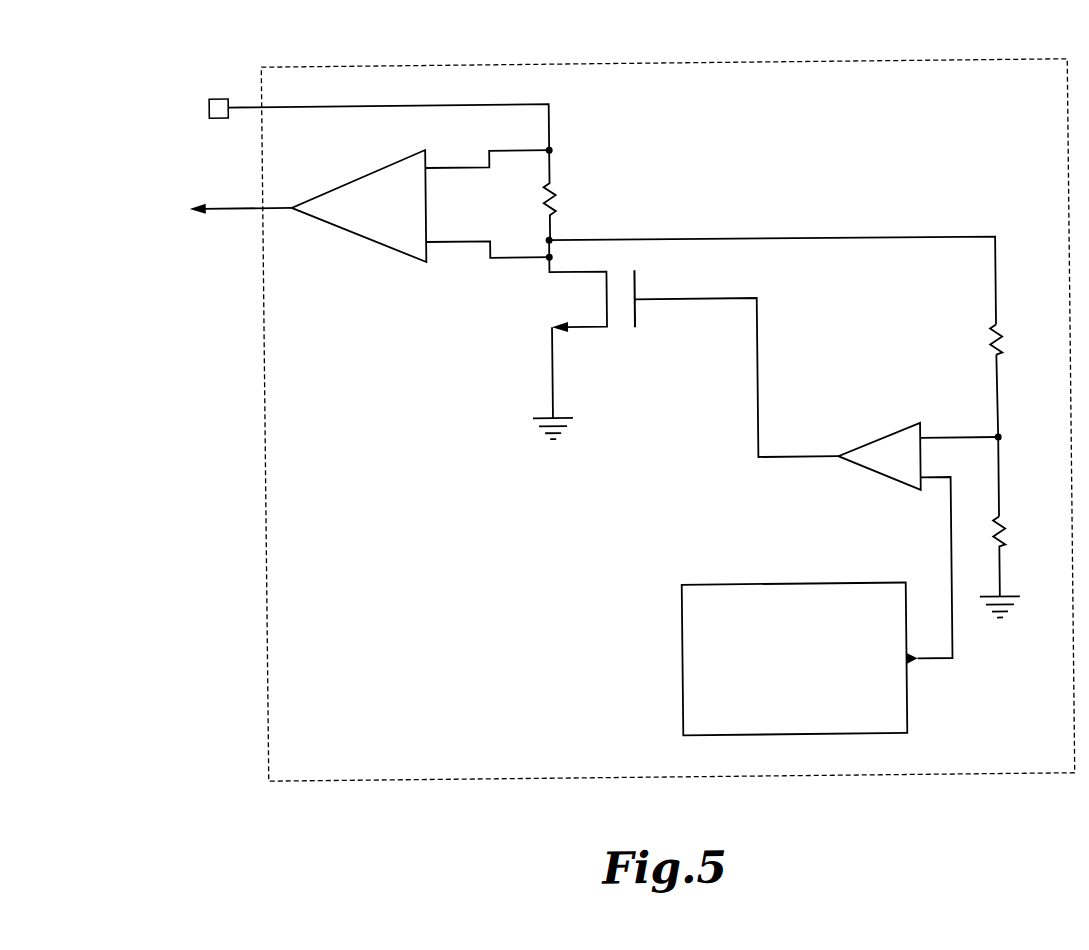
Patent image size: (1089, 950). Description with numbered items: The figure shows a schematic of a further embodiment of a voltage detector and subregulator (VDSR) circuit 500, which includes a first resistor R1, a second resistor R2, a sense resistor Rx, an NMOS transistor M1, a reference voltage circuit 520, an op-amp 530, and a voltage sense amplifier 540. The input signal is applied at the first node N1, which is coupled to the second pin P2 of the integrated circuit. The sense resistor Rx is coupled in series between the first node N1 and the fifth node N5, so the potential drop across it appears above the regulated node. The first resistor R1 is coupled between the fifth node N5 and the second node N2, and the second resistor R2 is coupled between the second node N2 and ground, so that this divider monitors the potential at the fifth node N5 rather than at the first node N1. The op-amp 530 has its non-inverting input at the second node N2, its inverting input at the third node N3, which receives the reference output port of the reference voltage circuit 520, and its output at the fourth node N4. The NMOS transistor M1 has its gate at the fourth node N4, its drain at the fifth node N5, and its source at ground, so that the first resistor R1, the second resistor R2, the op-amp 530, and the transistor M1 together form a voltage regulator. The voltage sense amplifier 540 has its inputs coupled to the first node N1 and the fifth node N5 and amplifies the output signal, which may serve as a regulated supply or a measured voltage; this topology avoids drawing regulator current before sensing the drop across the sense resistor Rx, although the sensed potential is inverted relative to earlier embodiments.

The voltage detector and subregulator (VDSR) circuit 500 is at (671, 55).
The reference voltage circuit 520 is at (791, 574).
The op-amp 530 is at (895, 425).
The voltage sense amplifier 540 is at (387, 260).
The second pin P2 is at (225, 78).
The first node N1 is at (321, 111).
The second node N2 is at (1005, 436).
The third node N3 is at (944, 531).
The fourth node N4 is at (723, 305).
The fifth node N5 is at (502, 268).
The NMOS transistor M1 is at (636, 347).
The sense resistor Rx is at (560, 174).
The first resistor R1 is at (999, 328).
The second resistor R2 is at (1002, 513).